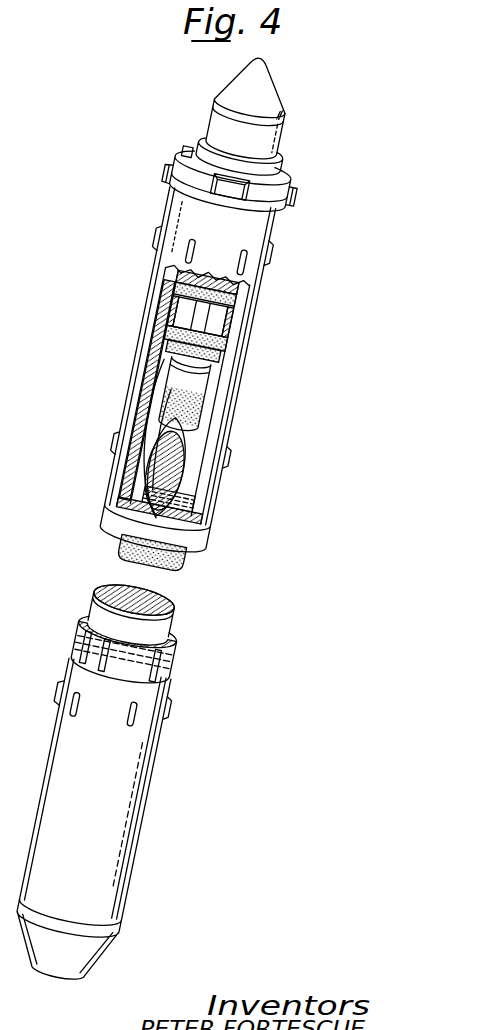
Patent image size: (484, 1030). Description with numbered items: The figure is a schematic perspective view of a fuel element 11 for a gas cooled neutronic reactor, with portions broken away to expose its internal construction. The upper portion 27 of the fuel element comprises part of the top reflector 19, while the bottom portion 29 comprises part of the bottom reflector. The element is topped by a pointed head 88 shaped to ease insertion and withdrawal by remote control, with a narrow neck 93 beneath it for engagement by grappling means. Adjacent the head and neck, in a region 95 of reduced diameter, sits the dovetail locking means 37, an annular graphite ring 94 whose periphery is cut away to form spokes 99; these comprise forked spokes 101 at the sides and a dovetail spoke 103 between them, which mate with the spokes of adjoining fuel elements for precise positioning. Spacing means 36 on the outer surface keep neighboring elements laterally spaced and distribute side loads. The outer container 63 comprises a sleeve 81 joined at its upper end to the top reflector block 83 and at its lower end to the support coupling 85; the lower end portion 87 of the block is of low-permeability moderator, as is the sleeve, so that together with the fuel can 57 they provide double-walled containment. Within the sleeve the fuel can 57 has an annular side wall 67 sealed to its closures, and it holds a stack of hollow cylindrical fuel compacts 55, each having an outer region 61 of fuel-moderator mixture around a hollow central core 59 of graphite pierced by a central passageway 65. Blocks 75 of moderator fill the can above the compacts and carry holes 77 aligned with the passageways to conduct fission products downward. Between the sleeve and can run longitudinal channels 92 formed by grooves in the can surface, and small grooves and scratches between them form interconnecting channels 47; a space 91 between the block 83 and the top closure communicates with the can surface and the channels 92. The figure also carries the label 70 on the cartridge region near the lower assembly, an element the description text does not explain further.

The fuel element 11 is at (230, 234).
The top reflector 19 is at (291, 91).
The upper portion 27 is at (338, 195).
The bottom portion 29 is at (153, 816).
The spacing means 36 is at (304, 714).
The dovetail locking means 37 is at (332, 141).
The channels 47 is at (110, 616).
The fuel compacts 55 is at (145, 451).
The fuel can 57 is at (297, 658).
The hollow central core 59 is at (250, 604).
The outer region 61 is at (276, 636).
The outer container 63 is at (130, 789).
The passageway 65 is at (157, 593).
The annular side wall 67 is at (180, 531).
The key 70 is at (208, 666).
The blocks 75 is at (232, 391).
The holes 77 is at (155, 430).
The sleeve 81 is at (234, 348).
The top reflector block 83 is at (327, 219).
The support coupling 85 is at (83, 943).
The lower end portion 87 is at (246, 288).
The pointed head 88 is at (245, 94).
The space 91 is at (224, 312).
The channels 92 is at (213, 522).
The narrow neck 93 is at (243, 132).
The annular graphite ring 94 is at (184, 193).
The region of reduced diameter 95 is at (321, 122).
The spokes 99 is at (242, 193).
The forked spokes 101 is at (199, 166).
The dovetail spoke 103 is at (343, 167).